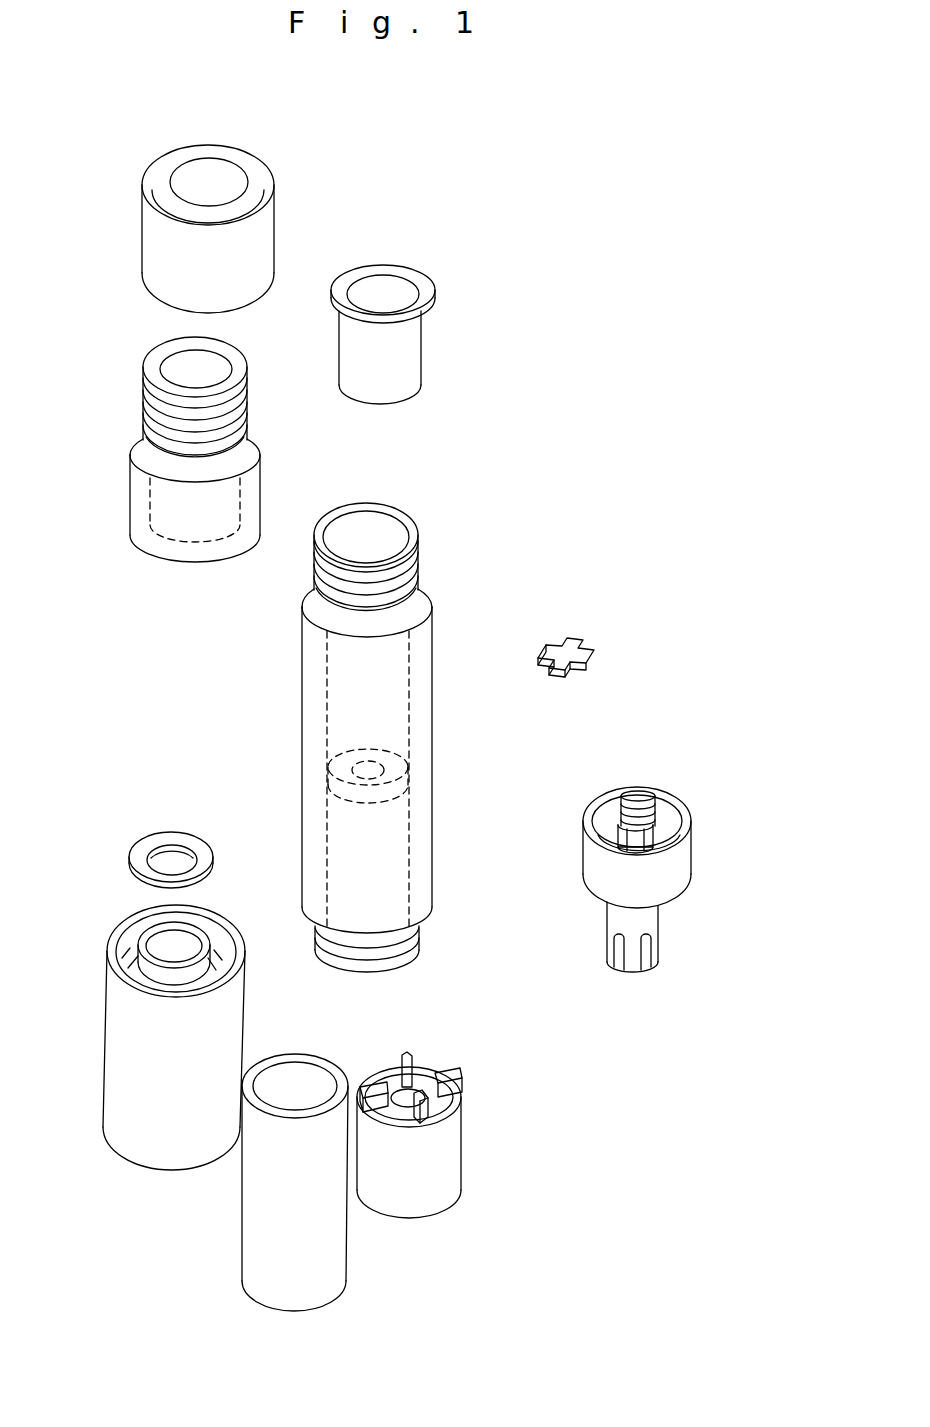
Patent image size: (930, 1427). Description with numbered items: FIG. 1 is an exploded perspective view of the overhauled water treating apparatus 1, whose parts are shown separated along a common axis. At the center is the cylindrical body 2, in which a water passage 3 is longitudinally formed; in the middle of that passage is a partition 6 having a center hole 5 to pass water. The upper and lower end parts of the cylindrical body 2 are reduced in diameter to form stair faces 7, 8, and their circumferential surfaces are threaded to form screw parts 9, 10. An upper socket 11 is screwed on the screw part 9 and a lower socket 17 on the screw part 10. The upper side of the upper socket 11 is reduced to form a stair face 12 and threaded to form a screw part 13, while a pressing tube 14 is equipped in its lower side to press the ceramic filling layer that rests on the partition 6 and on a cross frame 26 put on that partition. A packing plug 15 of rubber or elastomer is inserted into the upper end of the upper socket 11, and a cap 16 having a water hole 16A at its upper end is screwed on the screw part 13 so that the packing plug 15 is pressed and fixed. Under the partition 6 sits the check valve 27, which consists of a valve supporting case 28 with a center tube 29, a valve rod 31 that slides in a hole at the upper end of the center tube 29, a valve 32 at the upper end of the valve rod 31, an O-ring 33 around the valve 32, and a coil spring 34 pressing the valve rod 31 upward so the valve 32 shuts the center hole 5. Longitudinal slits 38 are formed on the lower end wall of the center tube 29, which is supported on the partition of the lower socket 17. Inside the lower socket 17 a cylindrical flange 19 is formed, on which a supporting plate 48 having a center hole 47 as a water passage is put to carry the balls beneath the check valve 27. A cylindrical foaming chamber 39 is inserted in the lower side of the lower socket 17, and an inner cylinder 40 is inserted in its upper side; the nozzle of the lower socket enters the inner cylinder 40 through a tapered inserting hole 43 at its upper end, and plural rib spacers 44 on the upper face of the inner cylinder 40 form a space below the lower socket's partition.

The water treating apparatus 1 is at (480, 432).
The cylindrical body 2 is at (373, 727).
The water passage 3 is at (363, 532).
The center hole 5 is at (378, 762).
The partition 6 is at (350, 765).
The stair face 7 is at (420, 607).
The stair face 8 is at (427, 915).
The screw part 9 is at (418, 578).
The screw part 10 is at (403, 963).
The upper socket 11 is at (203, 490).
The stair face 12 is at (140, 460).
The screw part 13 is at (138, 413).
The pressing tube 14 is at (215, 545).
The packing plug 15 is at (426, 354).
The cap 16 is at (241, 212).
The water hole 16A is at (218, 180).
The lower socket 17 is at (161, 1027).
The cylindrical flange 19 is at (210, 947).
The cross frame 26 is at (595, 654).
The check valve 27 is at (644, 875).
The valve supporting case 28 is at (691, 860).
The center tube 29 is at (658, 918).
The valve rod 31 is at (636, 843).
The valve 32 is at (641, 792).
The O-ring 33 is at (608, 800).
The coil spring 34 is at (654, 832).
The longitudinal slits 38 is at (618, 967).
The cylindrical foaming chamber 39 is at (248, 1210).
The inner cylinder 40 is at (445, 1109).
The inserting hole 43 is at (405, 1102).
The rib spacer 44 is at (375, 1080).
The center hole 47 is at (177, 865).
The supporting plate 48 is at (195, 824).